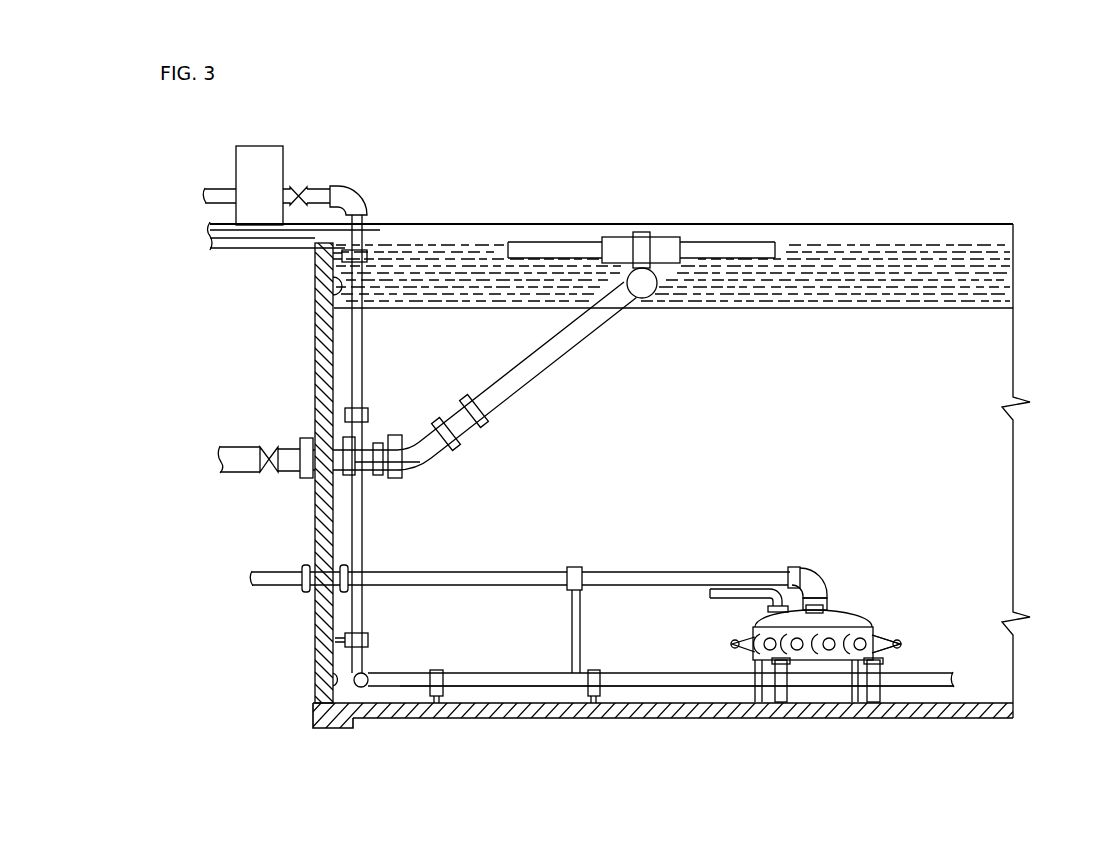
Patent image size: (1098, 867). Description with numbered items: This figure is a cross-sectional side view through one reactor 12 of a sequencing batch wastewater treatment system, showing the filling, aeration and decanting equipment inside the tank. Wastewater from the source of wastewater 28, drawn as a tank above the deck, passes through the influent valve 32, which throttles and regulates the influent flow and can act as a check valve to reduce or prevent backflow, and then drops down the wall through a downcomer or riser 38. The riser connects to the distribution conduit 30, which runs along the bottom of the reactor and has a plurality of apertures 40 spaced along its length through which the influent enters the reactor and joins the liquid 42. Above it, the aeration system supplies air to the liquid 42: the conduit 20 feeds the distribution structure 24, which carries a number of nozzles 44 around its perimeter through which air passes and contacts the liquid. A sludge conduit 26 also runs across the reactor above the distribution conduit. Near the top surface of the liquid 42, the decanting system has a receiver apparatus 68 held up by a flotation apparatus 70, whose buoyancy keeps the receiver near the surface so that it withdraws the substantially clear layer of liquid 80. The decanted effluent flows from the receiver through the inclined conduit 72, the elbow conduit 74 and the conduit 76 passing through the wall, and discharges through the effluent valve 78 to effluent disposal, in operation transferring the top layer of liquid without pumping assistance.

The reactor 12 is at (315, 362).
The conduit 20 is at (727, 597).
The distribution structure 24 is at (848, 608).
The sludge conduit 26 is at (627, 575).
The source of wastewater 28 is at (226, 185).
The distribution conduit 30 is at (920, 672).
The influent valve 32 is at (298, 187).
The downcomer or riser 38 is at (363, 337).
The apertures 40 is at (502, 686).
The liquid 42 is at (915, 446).
The nozzles 44 is at (893, 637).
The receiver apparatus 68 is at (652, 298).
The flotation apparatus 70 is at (735, 240).
The conduit 72 is at (553, 363).
The conduit 74 is at (412, 443).
The conduit 76 is at (220, 470).
The effluent valve 78 is at (272, 465).
The substantially clear layer of liquid 80 is at (1003, 253).